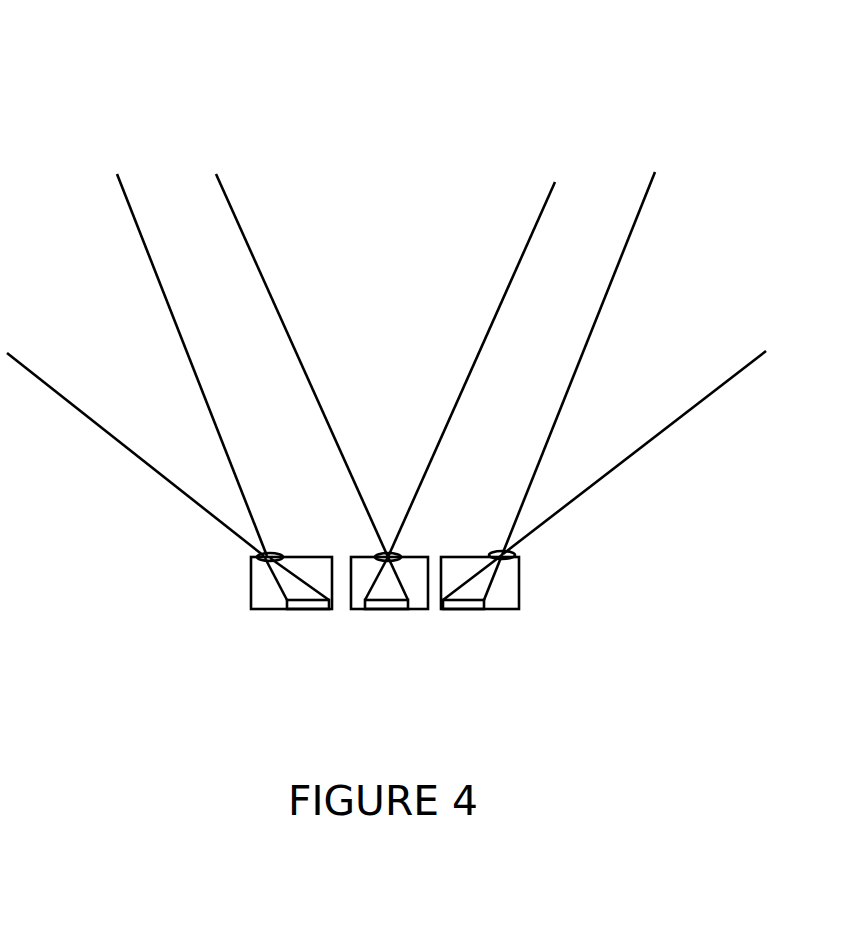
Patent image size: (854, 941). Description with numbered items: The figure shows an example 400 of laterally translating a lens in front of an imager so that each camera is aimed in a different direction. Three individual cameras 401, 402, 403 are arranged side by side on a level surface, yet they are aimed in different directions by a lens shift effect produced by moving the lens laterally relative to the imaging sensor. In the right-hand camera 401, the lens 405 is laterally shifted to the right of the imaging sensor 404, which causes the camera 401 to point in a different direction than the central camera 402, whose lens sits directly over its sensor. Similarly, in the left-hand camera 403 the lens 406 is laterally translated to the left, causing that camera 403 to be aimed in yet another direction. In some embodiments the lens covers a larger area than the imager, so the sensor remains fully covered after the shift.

The example of laterally translating a lens 400 is at (110, 106).
The camera 401 is at (519, 603).
The camera 402 is at (355, 610).
The camera 403 is at (258, 610).
The imaging sensor 404 is at (461, 604).
The lens 405 is at (504, 553).
The lens 406 is at (260, 556).